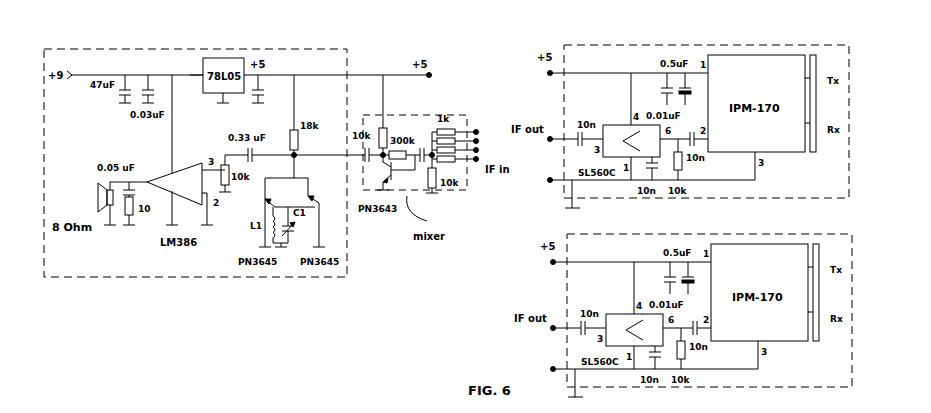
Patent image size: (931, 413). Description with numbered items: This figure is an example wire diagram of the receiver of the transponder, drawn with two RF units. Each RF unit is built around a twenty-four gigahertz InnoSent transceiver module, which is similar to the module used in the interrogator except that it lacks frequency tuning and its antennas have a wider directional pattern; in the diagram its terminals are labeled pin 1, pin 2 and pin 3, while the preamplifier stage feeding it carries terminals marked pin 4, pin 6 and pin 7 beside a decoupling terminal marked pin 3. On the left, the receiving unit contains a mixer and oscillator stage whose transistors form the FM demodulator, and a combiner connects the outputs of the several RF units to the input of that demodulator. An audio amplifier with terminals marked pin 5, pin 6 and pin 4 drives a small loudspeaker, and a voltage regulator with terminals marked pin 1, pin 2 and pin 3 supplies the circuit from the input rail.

The 78L05 pin 1 output 1 is at (251, 81).
The 78L05 pin 2 ground 2 is at (220, 101).
The 78L05 pin 3 input 3 is at (196, 69).
The LM386 pin 4 ground 4 is at (173, 208).
The LM386 pin 5 output 5 is at (128, 173).
The LM386 pin 6 supply 6 is at (176, 124).
The SL560C pin 7 is at (656, 168).